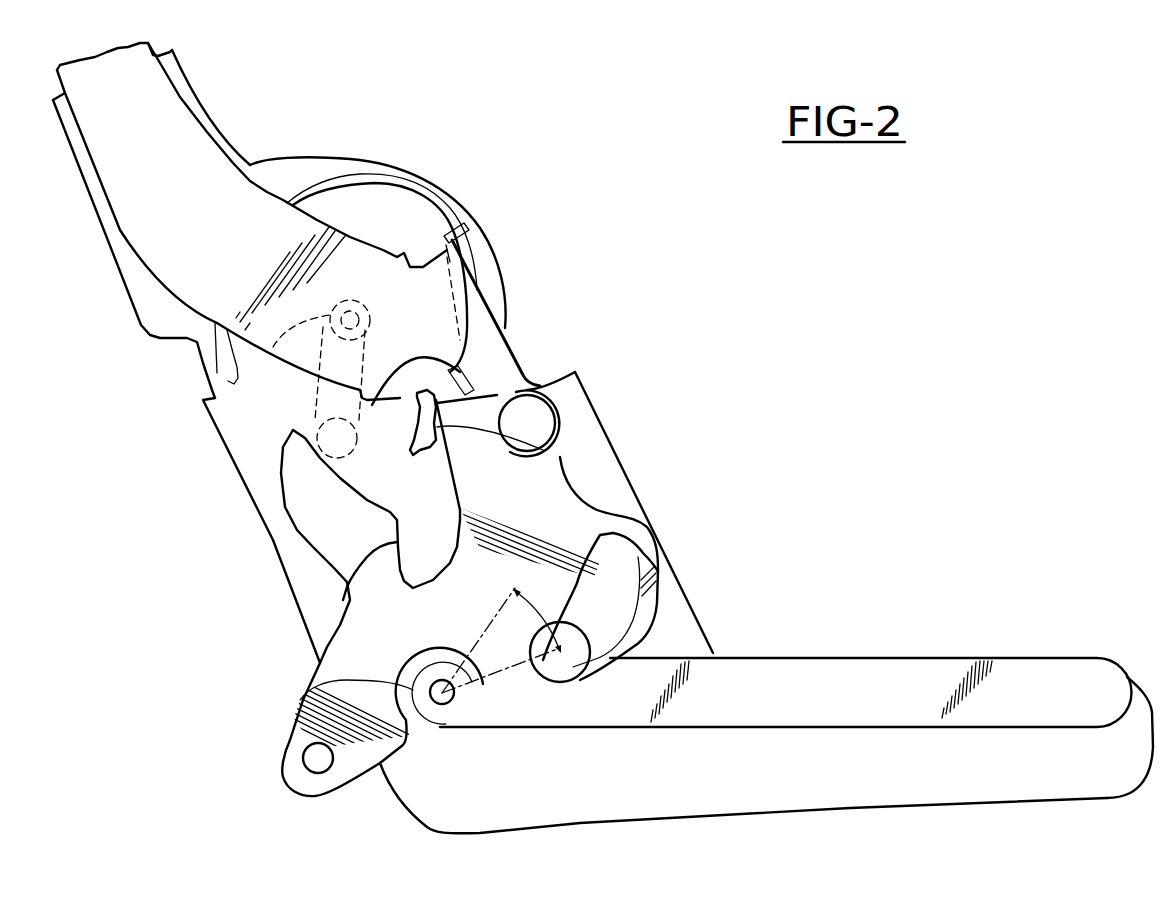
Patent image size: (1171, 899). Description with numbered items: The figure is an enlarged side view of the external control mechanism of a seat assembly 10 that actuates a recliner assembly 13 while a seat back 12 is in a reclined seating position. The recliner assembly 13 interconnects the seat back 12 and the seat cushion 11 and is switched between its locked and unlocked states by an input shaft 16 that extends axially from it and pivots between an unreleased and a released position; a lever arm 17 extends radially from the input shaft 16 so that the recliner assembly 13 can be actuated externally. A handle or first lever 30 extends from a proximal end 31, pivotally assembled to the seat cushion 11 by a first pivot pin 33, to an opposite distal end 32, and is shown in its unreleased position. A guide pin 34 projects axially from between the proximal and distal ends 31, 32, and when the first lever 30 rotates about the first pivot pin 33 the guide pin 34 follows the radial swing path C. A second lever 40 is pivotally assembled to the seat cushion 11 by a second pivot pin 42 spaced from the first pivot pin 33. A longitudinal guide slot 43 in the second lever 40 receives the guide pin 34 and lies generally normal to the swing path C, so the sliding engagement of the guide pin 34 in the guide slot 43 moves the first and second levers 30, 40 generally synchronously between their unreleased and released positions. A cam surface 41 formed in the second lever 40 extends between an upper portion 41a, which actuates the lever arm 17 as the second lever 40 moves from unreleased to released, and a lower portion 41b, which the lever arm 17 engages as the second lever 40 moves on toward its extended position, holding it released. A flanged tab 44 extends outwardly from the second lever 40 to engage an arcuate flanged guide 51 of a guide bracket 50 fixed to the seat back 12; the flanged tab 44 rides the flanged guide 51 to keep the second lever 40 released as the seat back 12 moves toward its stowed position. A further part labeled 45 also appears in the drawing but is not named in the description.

The seat assembly 10 is at (862, 360).
The seat cushion 11 is at (830, 798).
The seat back 12 is at (226, 139).
The recliner assembly 13 is at (378, 242).
The input shaft 16 is at (218, 368).
The lever arm 17 is at (320, 391).
The first lever 30 is at (937, 652).
The proximal end 31 is at (473, 730).
The distal end 32 is at (1128, 673).
The first pivot pin 33 is at (308, 697).
The guide pin 34 is at (575, 632).
The second lever 40 is at (310, 663).
The cam surface 41 is at (306, 469).
The upper portion 41a is at (341, 485).
The lower portion 41b is at (323, 463).
The second pivot pin 42 is at (548, 430).
The guide slot 43 is at (650, 556).
The flanged tab 44 is at (545, 431).
The release lever 45 is at (530, 375).
The guide bracket 50 is at (276, 181).
The flanged guide 51 is at (470, 323).
The swing path C is at (483, 684).